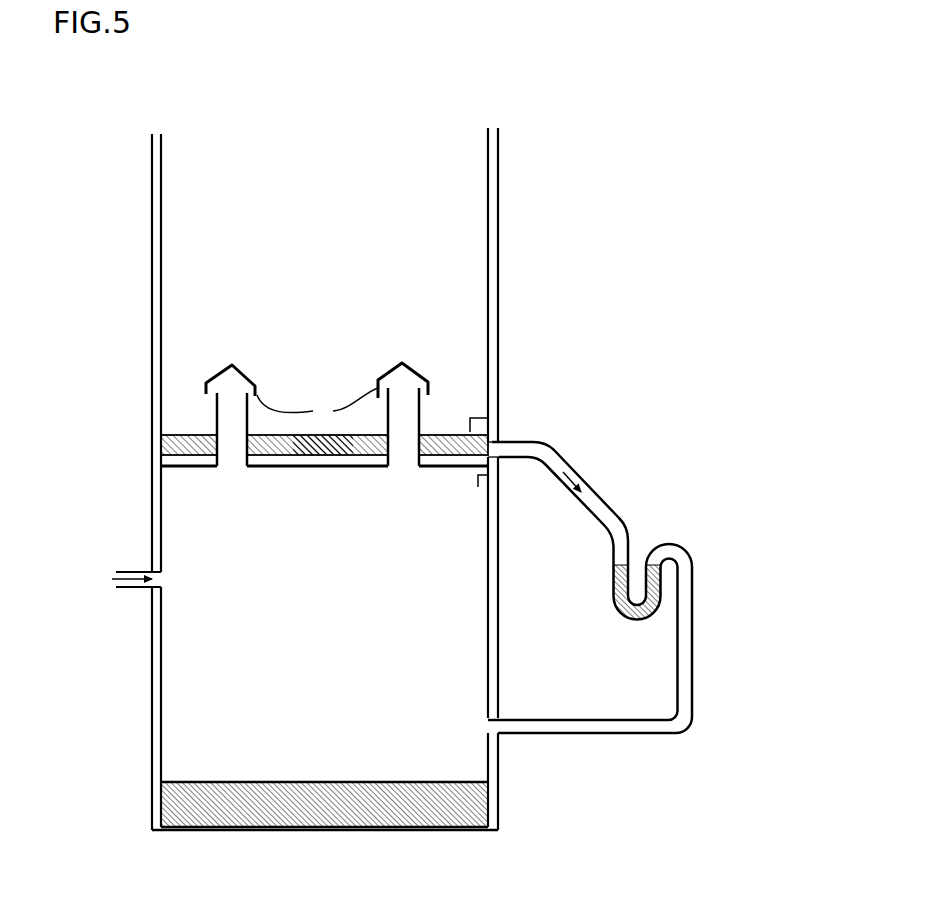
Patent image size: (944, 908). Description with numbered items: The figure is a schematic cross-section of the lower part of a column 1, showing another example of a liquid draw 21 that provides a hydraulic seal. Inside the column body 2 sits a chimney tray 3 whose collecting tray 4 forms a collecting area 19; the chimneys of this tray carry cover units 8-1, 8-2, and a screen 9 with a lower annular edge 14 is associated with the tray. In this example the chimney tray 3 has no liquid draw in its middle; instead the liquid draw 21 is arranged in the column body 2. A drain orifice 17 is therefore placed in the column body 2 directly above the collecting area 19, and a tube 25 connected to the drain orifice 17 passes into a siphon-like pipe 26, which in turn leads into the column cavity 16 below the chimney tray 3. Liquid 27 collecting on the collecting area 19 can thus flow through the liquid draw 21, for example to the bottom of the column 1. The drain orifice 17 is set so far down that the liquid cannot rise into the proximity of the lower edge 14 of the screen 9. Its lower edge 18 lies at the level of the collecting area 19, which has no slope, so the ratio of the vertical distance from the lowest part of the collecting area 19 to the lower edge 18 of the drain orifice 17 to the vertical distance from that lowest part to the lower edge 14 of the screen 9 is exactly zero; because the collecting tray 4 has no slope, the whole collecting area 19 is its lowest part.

The column 1 is at (335, 449).
The column body 2 is at (500, 160).
The chimney tray 3 is at (172, 460).
The collecting tray 4 is at (423, 468).
The cover unit 8-1 is at (247, 380).
The cover unit 8-2 is at (427, 378).
The screen 9 is at (317, 406).
The lower edge of the screen 14 is at (206, 405).
The column cavity 16 is at (343, 268).
The drain orifice 17 is at (502, 458).
The lower edge of the drain orifice 18 is at (473, 491).
The collecting area 19 is at (489, 400).
The liquid draw 21 is at (605, 492).
The tube 25 is at (540, 443).
The siphon-like pipe 26 is at (603, 605).
The liquid 27 is at (502, 440).